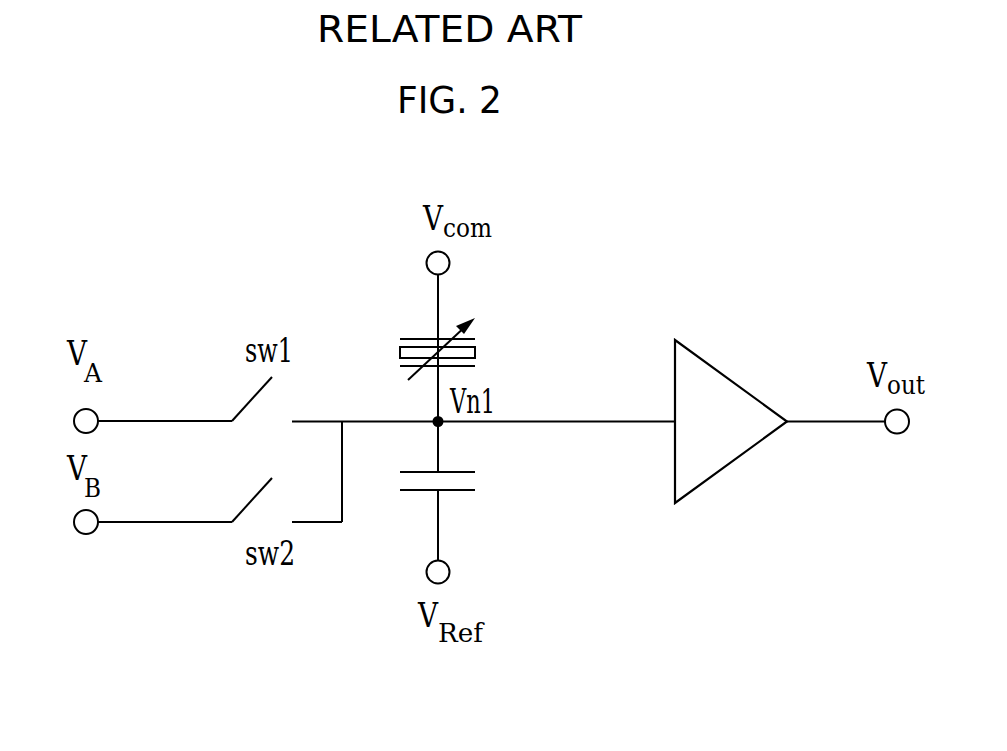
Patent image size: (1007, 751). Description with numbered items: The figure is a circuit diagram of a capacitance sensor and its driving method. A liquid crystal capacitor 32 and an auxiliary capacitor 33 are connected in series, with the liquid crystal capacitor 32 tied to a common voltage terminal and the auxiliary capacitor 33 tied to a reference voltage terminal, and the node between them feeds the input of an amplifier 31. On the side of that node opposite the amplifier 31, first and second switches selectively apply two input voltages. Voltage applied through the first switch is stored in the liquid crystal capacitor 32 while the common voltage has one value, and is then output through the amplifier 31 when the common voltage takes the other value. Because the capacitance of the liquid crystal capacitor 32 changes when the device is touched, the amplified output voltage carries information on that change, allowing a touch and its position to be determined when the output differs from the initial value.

The amplifier 31 is at (723, 375).
The liquid crystal capacitor 32 is at (501, 370).
The auxiliary capacitor 33 is at (506, 491).